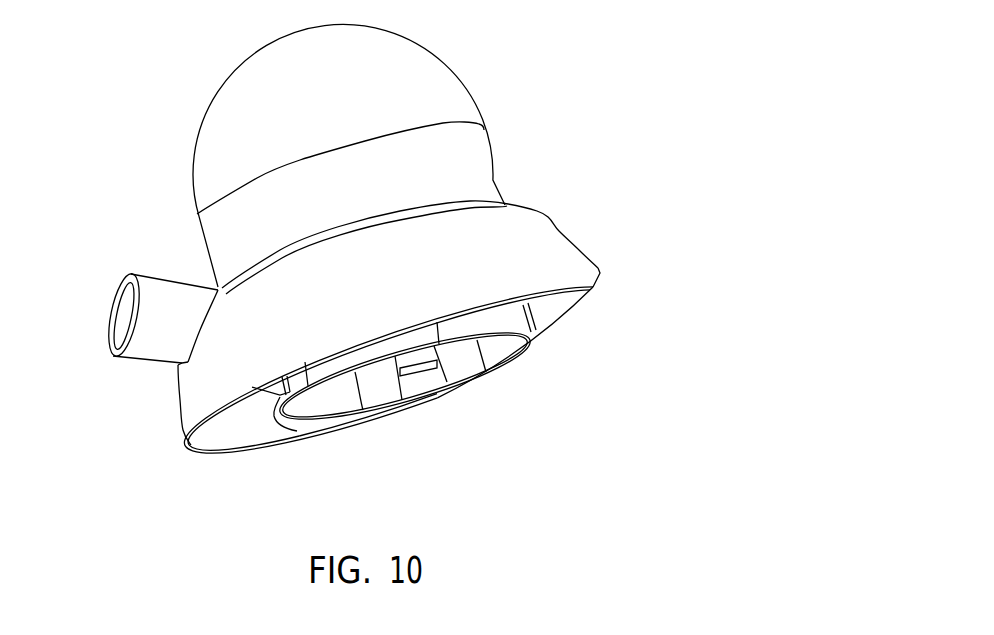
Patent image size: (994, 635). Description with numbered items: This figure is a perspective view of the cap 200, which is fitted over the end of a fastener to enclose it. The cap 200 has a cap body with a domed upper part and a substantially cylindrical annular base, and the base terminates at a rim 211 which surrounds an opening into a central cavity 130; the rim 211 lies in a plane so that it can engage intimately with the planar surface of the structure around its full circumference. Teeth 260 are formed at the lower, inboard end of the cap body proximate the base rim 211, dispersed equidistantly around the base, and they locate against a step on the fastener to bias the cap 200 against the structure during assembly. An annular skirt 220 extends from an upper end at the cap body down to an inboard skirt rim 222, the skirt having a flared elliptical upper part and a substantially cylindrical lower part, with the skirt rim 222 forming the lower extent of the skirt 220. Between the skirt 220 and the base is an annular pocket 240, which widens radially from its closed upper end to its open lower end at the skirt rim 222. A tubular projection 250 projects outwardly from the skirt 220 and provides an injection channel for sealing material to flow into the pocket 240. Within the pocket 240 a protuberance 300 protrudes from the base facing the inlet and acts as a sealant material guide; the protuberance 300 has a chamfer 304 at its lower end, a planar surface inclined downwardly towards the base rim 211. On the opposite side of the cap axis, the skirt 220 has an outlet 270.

The cap 200 is at (484, 66).
The annular skirt 220 is at (567, 250).
The tubular projection 250 is at (165, 298).
The outlet 270 is at (587, 295).
The skirt rim 222 is at (193, 448).
The annular pocket 240 is at (225, 425).
The rim 211 is at (293, 420).
The central cavity 130 is at (508, 348).
The teeth 260 is at (423, 385).
The protuberance 300 is at (265, 387).
The chamfer 304 is at (270, 410).